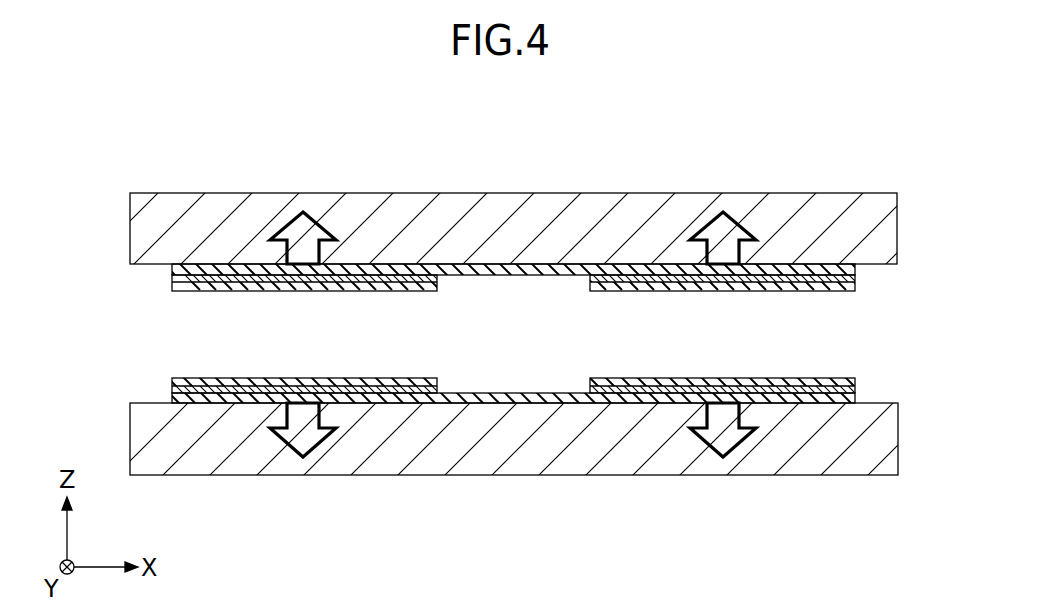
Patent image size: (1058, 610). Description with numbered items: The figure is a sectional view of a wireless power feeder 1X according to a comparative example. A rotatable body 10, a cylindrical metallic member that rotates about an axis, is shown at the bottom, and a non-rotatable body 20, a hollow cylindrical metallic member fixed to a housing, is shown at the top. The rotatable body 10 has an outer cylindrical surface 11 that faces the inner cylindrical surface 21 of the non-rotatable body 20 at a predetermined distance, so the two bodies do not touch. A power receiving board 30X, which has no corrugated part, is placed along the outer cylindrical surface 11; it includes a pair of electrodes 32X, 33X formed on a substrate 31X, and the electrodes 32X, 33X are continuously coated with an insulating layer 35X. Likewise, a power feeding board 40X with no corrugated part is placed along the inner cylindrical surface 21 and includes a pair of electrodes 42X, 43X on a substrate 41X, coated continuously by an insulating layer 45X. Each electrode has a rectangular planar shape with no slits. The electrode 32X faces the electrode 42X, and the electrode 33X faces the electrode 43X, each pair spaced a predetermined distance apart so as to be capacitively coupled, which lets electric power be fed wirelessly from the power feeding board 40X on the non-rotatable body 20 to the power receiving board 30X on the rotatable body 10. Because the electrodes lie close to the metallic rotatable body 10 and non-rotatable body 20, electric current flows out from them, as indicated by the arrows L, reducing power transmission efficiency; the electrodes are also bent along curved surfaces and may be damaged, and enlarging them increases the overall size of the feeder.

The wireless power feeder 1X is at (77, 143).
The rotatable body 10 is at (893, 440).
The outer cylindrical surface 11 is at (870, 398).
The non-rotatable body 20 is at (896, 228).
The inner cylindrical surface 21 is at (878, 272).
The power receiving board 30X is at (192, 375).
The substrate 31X is at (513, 398).
The electrode 32X is at (368, 398).
The electrode 33X is at (660, 398).
The insulating layer 35X is at (369, 381).
The power feeding board 40X is at (192, 297).
The substrate 41X is at (513, 270).
The electrode 42X is at (368, 270).
The electrode 43X is at (660, 270).
The insulating layer 45X is at (303, 293).
The arrows L is at (286, 225).